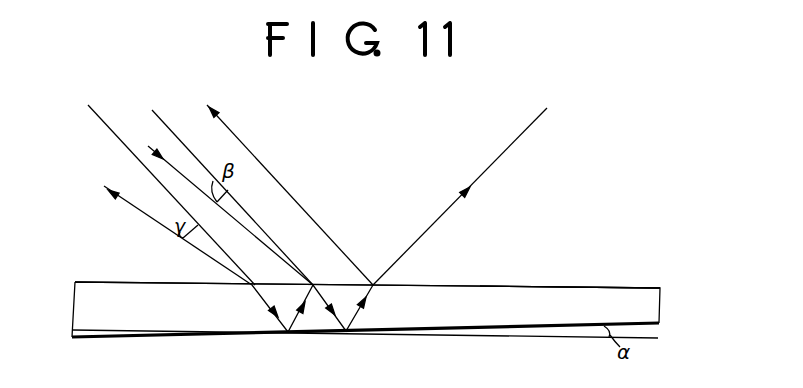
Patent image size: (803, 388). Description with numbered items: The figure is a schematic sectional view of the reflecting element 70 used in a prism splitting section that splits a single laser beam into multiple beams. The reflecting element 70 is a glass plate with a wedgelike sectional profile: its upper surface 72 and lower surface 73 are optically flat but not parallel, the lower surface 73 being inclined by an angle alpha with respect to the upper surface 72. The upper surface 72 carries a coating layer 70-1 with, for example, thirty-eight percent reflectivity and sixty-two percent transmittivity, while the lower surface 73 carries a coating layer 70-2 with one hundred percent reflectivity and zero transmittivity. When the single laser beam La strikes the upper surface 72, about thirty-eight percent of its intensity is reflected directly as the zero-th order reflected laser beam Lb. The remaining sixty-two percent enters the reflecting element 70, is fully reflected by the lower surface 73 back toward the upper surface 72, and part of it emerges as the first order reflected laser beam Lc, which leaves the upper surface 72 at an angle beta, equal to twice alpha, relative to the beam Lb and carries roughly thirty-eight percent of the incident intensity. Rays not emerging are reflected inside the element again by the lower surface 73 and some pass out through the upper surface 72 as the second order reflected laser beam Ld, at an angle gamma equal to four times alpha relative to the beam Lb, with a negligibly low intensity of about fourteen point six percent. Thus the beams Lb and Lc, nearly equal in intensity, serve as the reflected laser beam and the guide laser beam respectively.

The reflecting element 70 is at (627, 284).
The coating layer 70-1 is at (462, 287).
The coating layer 70-2 is at (450, 331).
The upper surface 72 is at (553, 287).
The lower surface 73 is at (545, 320).
The single laser beam La is at (513, 143).
The 0-th order reflected laser beam Lb is at (258, 158).
The 1-st order reflected laser beam Lc is at (172, 163).
The 2-nd order reflected laser beam Ld is at (132, 208).